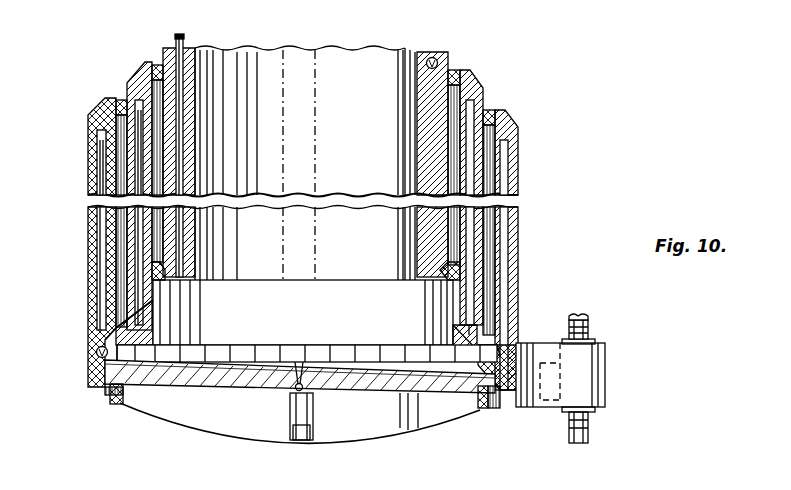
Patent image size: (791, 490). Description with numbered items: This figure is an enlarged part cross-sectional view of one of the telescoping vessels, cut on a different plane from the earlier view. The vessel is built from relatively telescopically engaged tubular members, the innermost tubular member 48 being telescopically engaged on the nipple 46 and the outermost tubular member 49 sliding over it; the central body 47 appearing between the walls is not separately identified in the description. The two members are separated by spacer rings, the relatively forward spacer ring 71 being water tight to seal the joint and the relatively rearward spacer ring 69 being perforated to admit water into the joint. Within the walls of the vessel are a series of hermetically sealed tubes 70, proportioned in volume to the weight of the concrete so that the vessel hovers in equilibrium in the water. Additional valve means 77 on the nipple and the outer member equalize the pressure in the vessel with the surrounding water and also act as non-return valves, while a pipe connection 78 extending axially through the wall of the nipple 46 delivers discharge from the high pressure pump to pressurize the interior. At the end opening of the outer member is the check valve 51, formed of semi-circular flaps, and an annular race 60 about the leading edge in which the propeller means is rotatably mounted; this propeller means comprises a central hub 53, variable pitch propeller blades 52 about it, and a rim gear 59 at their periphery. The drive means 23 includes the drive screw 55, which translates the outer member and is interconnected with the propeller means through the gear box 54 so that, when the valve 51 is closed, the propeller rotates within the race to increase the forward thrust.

The drive means 23 is at (594, 432).
The nipple 46 is at (428, 88).
The cylindrical body 47 is at (347, 137).
The innermost tubular member 48 is at (145, 68).
The outermost tubular member 49 is at (95, 114).
The check valve 51 is at (215, 370).
The propeller blades 52 is at (235, 425).
The central hub 53 is at (315, 417).
The gear box 54 is at (605, 382).
The drive screw 55 is at (591, 320).
The rim gear 59 is at (115, 402).
The annular race 60 is at (112, 403).
The rearward spacer ring 69 is at (462, 72).
The hermetically sealed tubes 70 is at (140, 145).
The forward spacer ring 71 is at (150, 264).
The valve means 77 is at (448, 54).
The pipe connection 78 is at (179, 38).